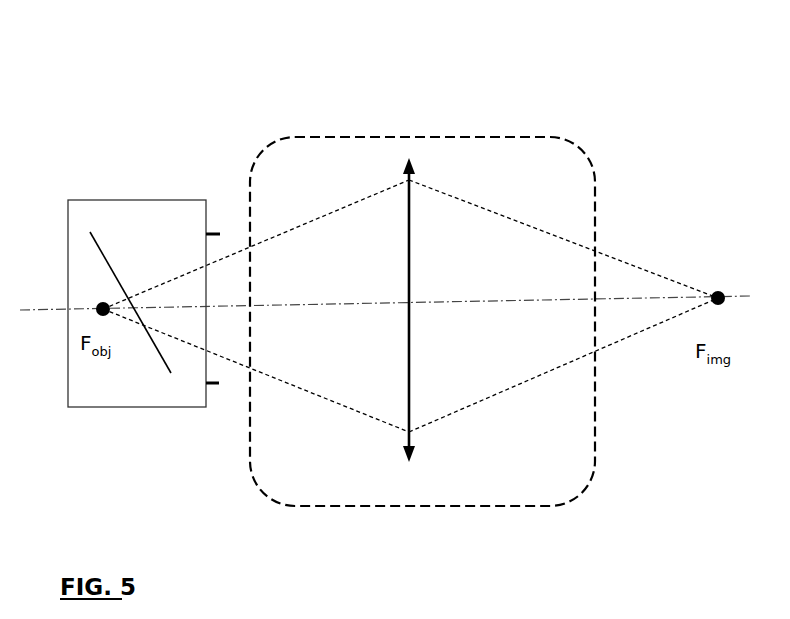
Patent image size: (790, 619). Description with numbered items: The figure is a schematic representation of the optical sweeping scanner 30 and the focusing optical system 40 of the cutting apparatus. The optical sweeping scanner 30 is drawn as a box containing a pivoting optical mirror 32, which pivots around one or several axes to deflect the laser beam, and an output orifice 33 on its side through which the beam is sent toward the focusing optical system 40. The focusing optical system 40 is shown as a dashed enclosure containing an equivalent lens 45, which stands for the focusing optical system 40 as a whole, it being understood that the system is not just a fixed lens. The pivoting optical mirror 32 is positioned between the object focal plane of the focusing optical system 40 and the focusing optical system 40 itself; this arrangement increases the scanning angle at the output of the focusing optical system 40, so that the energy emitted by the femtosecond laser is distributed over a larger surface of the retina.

The optical sweeping scanner 30 is at (139, 200).
The optical mirror 32 is at (163, 360).
The output orifice 33 is at (220, 234).
The focusing optical system 40 is at (537, 137).
The equivalent lens 45 is at (410, 457).